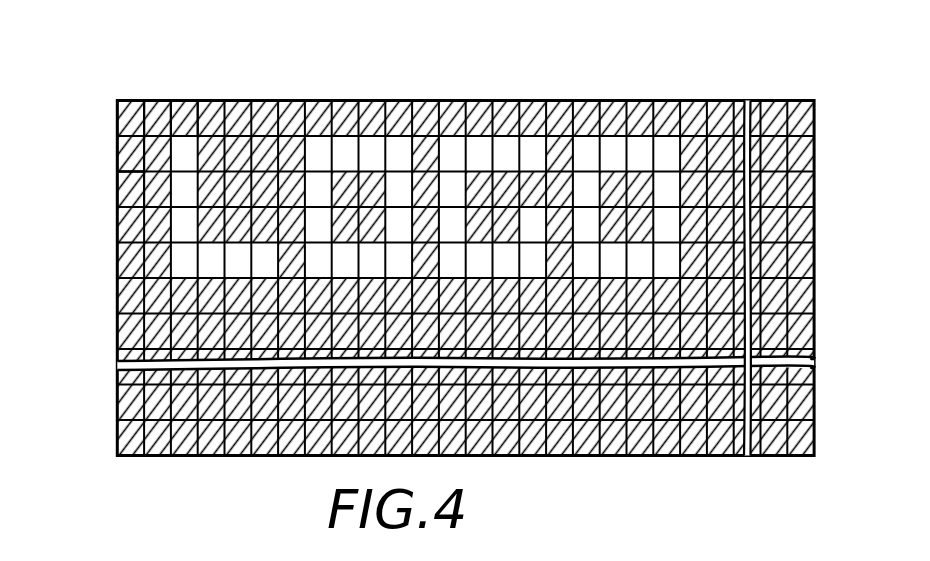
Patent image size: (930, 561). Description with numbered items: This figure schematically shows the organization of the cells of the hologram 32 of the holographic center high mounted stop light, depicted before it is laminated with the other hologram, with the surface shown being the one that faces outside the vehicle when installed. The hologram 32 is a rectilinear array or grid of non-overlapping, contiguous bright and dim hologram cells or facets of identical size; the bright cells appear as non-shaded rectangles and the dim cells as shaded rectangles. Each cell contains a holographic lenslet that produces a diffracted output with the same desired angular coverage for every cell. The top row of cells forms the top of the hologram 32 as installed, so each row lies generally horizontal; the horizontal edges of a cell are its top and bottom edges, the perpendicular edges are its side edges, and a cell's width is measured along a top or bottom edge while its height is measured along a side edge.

The hologram 32 is at (757, 98).